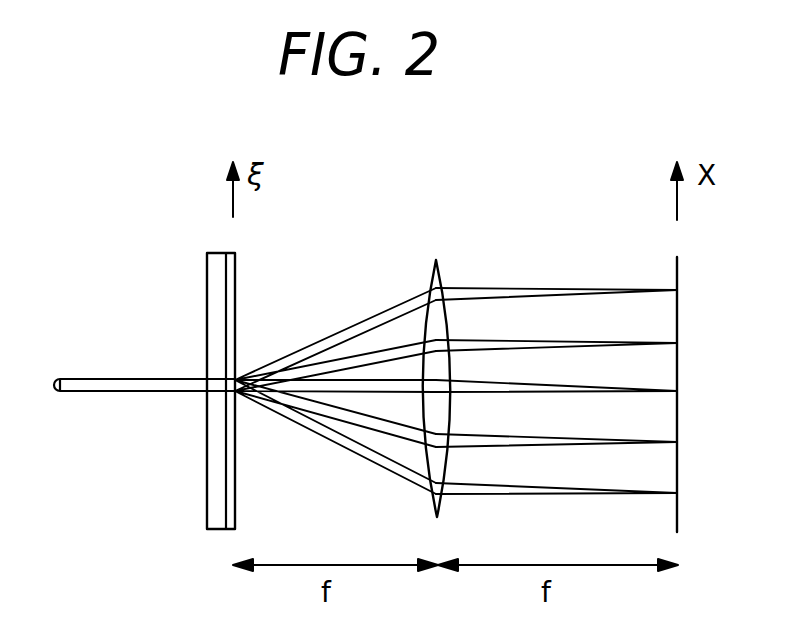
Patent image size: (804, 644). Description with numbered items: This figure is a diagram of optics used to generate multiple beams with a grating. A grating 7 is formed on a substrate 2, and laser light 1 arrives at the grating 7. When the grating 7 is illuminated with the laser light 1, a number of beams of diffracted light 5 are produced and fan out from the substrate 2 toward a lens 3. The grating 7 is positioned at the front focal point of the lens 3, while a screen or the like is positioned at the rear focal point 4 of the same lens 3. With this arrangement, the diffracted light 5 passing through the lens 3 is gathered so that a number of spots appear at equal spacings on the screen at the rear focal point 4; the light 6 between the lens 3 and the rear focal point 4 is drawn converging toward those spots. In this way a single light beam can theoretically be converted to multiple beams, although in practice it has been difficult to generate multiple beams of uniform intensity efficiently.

The laser light 1 is at (104, 378).
The substrate 2 is at (212, 298).
The lens 3 is at (427, 277).
The rear focal point 4 is at (678, 303).
The diffracted light 5 is at (358, 457).
The light rays between lens and plane 6 is at (543, 287).
The grating 7 is at (236, 268).